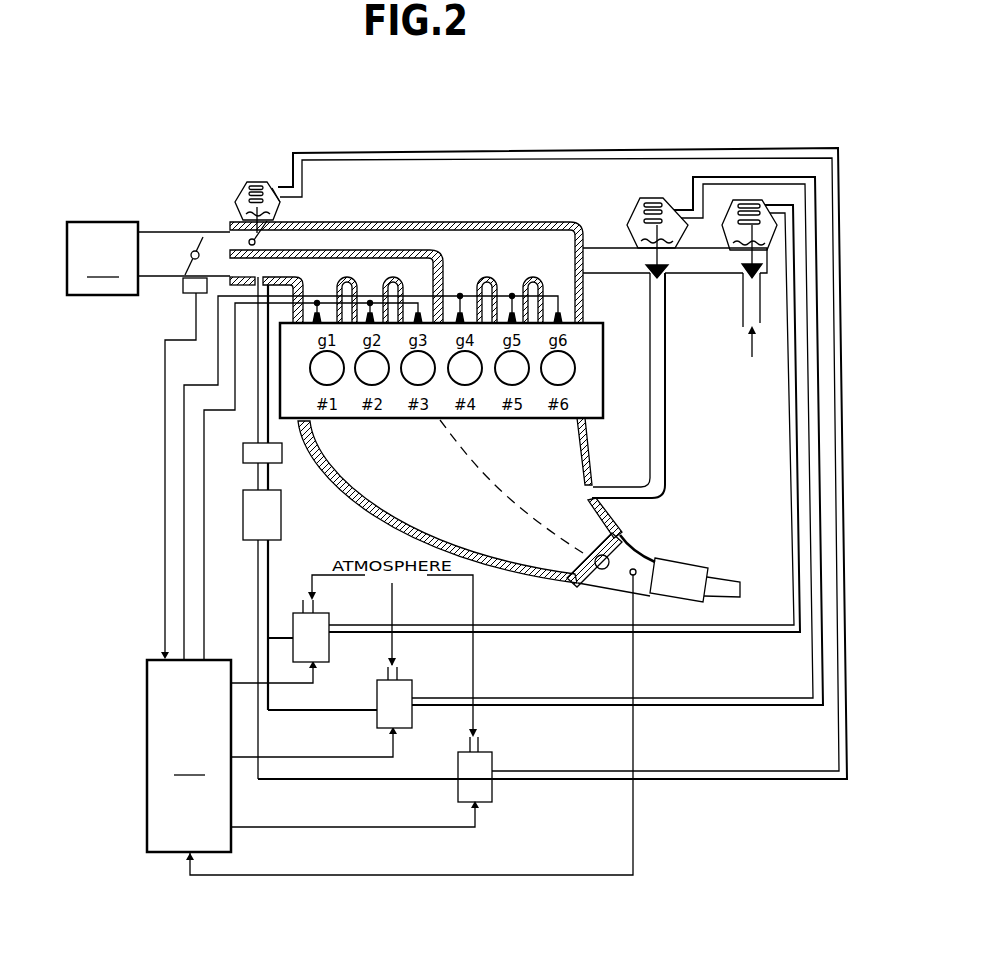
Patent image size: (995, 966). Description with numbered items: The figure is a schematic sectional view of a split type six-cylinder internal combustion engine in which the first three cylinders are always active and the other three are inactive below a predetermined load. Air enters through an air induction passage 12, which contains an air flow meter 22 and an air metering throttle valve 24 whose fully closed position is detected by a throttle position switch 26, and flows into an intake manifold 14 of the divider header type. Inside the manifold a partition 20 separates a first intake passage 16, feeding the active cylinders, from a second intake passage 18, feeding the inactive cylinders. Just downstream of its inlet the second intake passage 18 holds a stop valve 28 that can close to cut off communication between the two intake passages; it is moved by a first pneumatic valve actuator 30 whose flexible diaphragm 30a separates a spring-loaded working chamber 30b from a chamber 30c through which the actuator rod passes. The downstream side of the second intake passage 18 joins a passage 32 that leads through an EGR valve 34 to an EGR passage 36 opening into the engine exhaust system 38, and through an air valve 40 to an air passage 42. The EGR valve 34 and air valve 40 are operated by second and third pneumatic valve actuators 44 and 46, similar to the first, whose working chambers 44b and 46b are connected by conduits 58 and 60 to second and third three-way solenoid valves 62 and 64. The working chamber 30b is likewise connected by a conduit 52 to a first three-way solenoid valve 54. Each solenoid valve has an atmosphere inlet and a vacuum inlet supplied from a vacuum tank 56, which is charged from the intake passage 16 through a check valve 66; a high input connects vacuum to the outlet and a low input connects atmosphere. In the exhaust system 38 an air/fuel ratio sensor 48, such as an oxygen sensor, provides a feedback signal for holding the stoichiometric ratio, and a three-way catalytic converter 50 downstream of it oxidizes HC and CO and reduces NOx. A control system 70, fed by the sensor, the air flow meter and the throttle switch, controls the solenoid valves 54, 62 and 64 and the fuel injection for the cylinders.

The air induction passage 12 is at (168, 232).
The intake manifold 14 is at (453, 222).
The first intake passage 16 is at (316, 290).
The second intake passage 18 is at (510, 285).
The partition 20 is at (386, 250).
The air flow meter 22 is at (102, 258).
The air metering throttle valve 24 is at (198, 233).
The throttle position switch 26 is at (183, 290).
The stop valve 28 is at (247, 241).
The first pneumatic valve actuator 30 is at (252, 182).
The flexible diaphragm 30a is at (277, 196).
The working chamber 30b is at (268, 196).
The chamber 30c is at (263, 211).
The passage 32 is at (690, 276).
The exhaust gas recirculation (EGR) valve 34 is at (645, 272).
The EGR passage 36 is at (666, 441).
The engine exhaust system 38 is at (612, 515).
The air valve 40 is at (760, 279).
The air passage 42 is at (742, 307).
The second pneumatic valve actuator 44 is at (662, 198).
The working chamber 44b is at (632, 218).
The third pneumatic valve actuator 46 is at (760, 200).
The working chamber 46b is at (730, 212).
The air/fuel ratio sensor 48 is at (641, 558).
The three-way catalytic converter 50 is at (692, 602).
The conduit 52 is at (406, 152).
The first three-way solenoid valve 54 is at (492, 790).
The vacuum tank 56 is at (282, 517).
The conduit 58 is at (549, 707).
The conduit 60 is at (542, 634).
The second three-way solenoid valve 62 is at (410, 730).
The third three-way solenoid valve 64 is at (316, 663).
The check valve 66 is at (282, 455).
The control system 70 is at (189, 756).